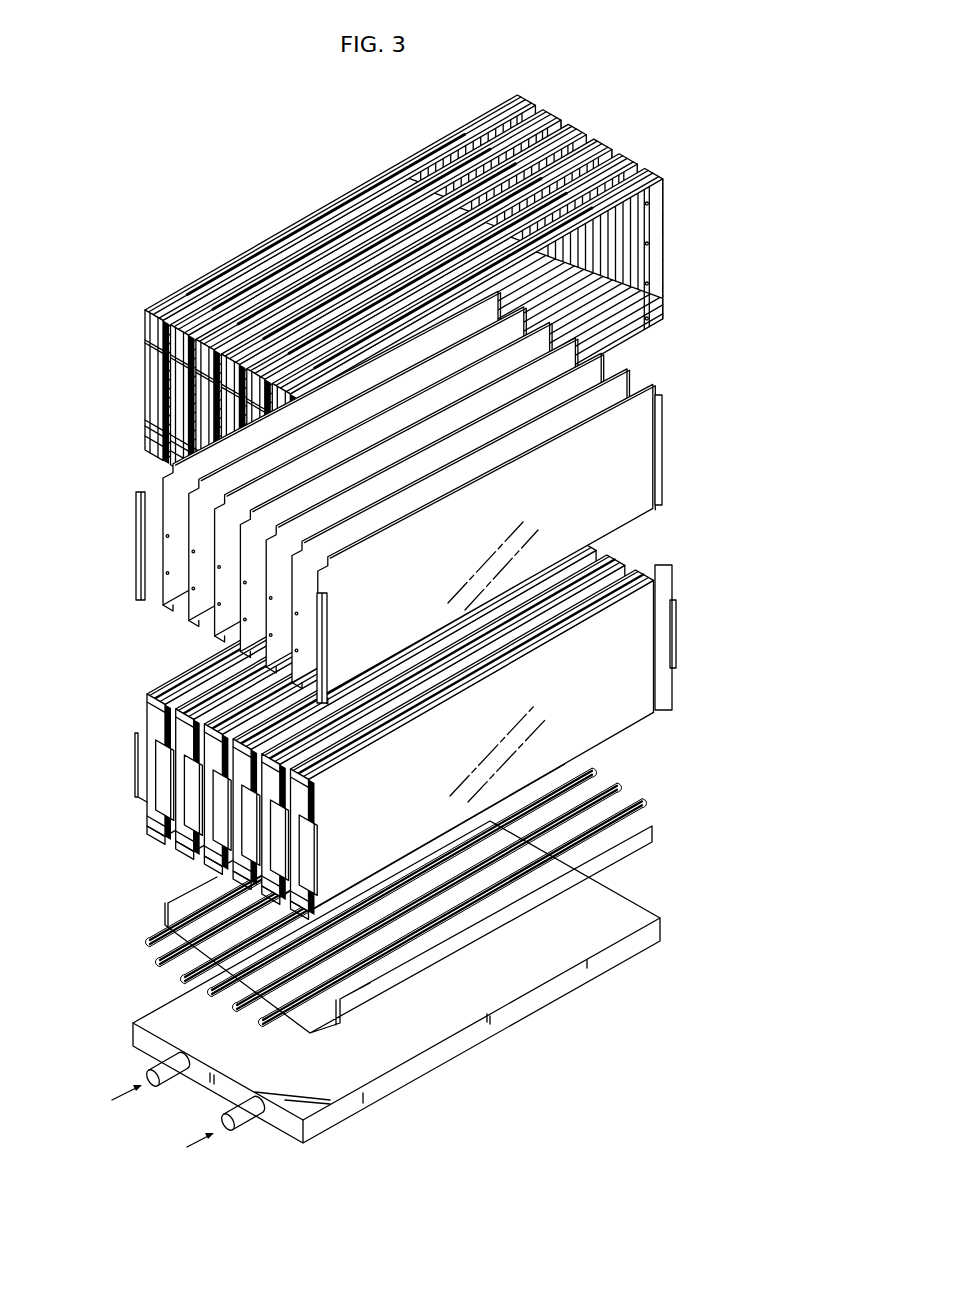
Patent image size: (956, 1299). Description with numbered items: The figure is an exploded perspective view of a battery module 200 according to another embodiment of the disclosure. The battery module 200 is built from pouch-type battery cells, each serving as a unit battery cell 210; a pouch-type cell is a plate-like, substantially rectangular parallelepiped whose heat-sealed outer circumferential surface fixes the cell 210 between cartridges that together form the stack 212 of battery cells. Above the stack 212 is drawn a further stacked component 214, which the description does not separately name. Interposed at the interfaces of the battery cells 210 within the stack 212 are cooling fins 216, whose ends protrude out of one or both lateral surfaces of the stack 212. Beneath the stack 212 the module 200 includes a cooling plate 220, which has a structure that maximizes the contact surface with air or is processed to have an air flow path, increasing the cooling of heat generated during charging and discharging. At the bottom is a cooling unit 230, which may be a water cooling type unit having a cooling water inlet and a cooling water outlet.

The battery module 200 is at (170, 204).
The battery cell 210 is at (136, 761).
The stack of battery cells 212 is at (140, 689).
The cooling fin cartridge 214 is at (146, 323).
The cooling fins 216 is at (150, 549).
The cooling plate 220 is at (160, 940).
The cooling unit 230 is at (150, 1020).